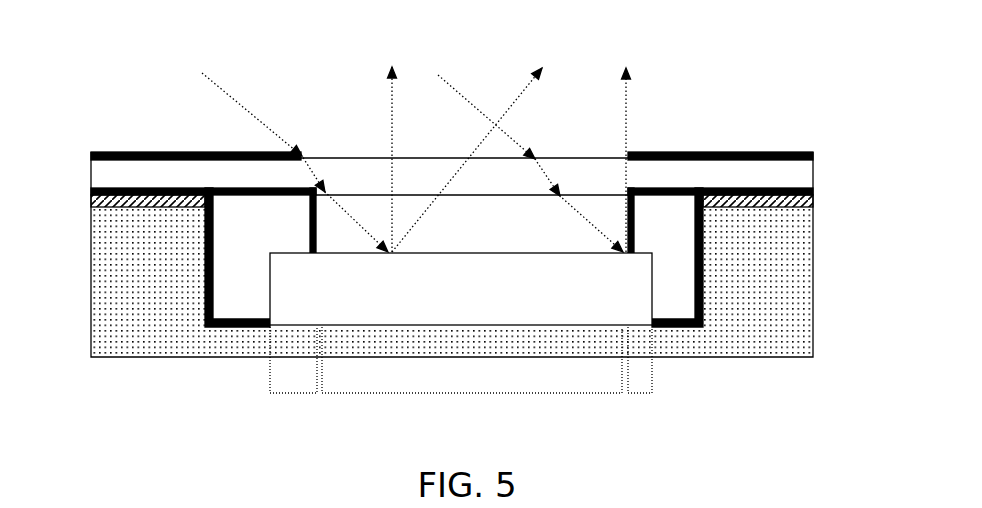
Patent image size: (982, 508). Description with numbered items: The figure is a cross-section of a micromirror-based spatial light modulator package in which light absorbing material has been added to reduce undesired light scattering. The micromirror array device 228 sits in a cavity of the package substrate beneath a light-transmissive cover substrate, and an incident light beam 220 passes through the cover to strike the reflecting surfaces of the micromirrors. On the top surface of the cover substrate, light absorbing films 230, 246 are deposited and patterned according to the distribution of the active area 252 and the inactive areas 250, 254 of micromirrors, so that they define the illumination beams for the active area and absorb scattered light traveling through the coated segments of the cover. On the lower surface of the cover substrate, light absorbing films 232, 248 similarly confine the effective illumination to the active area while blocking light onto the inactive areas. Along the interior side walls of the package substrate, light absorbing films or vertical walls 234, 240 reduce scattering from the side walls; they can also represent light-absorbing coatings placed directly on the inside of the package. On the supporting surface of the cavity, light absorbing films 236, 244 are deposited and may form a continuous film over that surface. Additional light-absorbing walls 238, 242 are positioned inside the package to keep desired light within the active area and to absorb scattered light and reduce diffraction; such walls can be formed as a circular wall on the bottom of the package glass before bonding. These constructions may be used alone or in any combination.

The incident light beam 220 is at (227, 92).
The micromirror array device 228 is at (462, 250).
The light absorbing film 230 is at (128, 153).
The light absorbing film 232 is at (195, 185).
The light absorbing film on side wall 234 is at (202, 253).
The light absorbing film on supporting surface 236 is at (233, 315).
The light absorbing wall 238 is at (310, 237).
The light absorbing film on side wall 240 is at (703, 273).
The light absorbing wall 242 is at (632, 240).
The light absorbing film on supporting surface 244 is at (668, 328).
The light absorbing film 246 is at (700, 153).
The light absorbing film 248 is at (766, 185).
The inactive area 250 is at (298, 395).
The active area 252 is at (460, 395).
The inactive area 254 is at (640, 395).